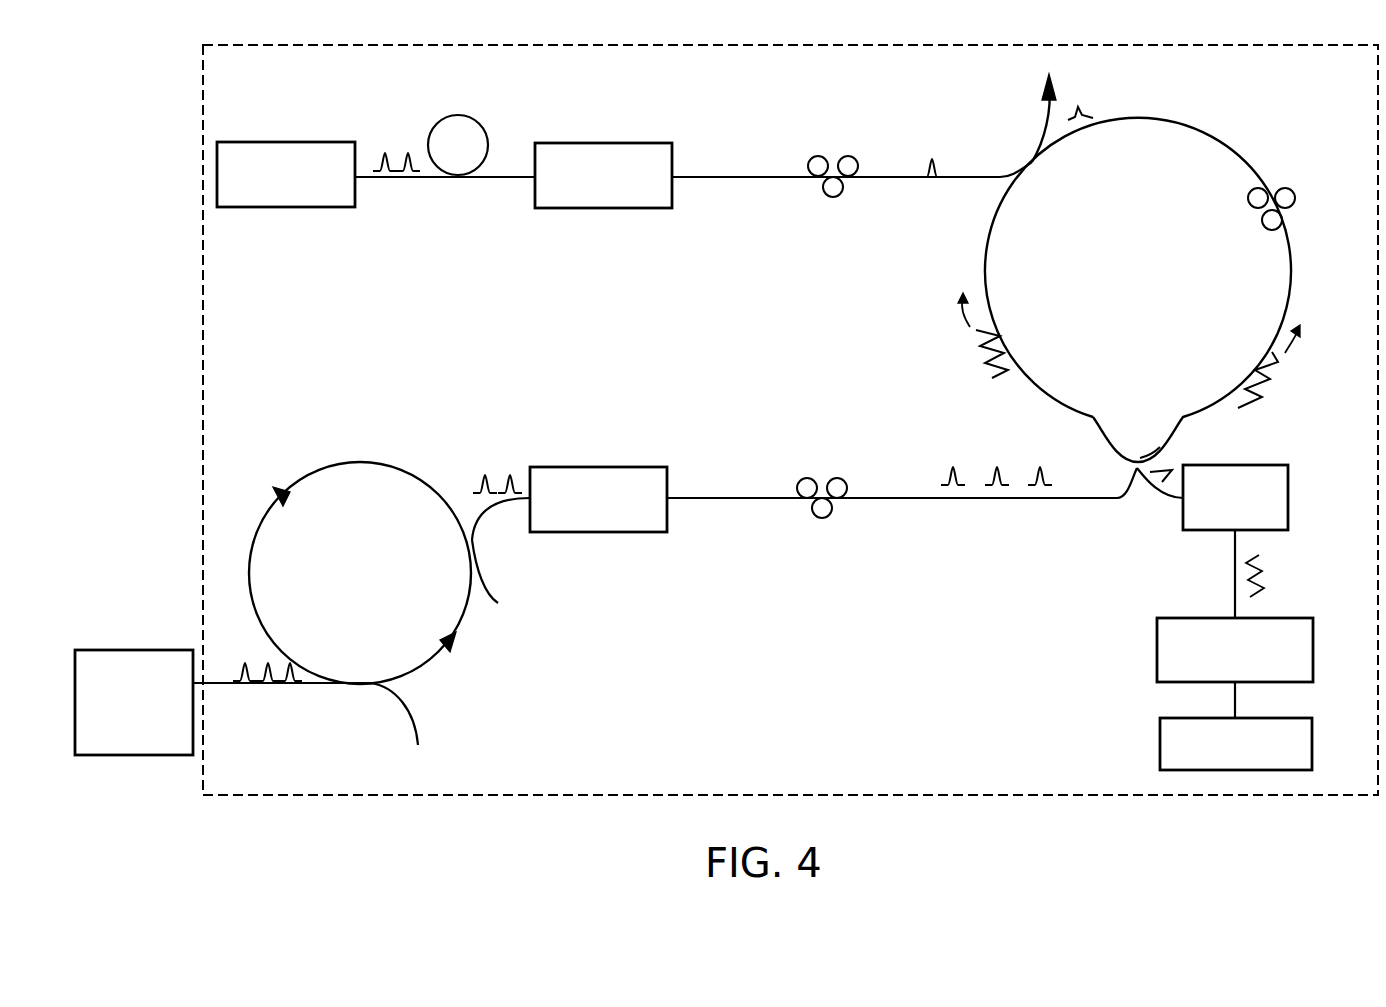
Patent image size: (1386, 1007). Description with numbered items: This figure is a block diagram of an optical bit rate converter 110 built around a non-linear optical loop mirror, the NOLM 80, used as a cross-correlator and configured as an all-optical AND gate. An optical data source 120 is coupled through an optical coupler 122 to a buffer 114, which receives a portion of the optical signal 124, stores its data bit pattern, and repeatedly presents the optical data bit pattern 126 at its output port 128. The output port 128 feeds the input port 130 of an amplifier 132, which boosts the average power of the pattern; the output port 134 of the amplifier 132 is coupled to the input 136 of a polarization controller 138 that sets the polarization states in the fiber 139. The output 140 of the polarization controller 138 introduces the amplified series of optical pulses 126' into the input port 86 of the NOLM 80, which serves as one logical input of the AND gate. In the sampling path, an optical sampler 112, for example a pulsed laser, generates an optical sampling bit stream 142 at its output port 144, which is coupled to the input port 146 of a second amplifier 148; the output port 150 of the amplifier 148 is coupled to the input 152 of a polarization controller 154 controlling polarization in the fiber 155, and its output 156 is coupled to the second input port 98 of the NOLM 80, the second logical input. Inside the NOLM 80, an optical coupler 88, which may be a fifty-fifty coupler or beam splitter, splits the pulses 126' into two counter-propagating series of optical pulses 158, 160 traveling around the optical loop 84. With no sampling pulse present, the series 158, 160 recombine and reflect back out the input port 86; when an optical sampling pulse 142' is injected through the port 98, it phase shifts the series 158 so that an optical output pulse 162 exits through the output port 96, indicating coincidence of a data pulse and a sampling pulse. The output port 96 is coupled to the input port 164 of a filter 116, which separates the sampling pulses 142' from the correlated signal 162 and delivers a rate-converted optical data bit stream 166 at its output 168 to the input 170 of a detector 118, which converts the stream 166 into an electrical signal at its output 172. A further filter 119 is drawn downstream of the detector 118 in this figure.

The NOLM 80 is at (1313, 123).
The optical loop 84 is at (1242, 158).
The input port 86 is at (1119, 491).
The optical coupler 88 is at (1152, 458).
The output port 96 is at (1150, 498).
The second input port 98 is at (1032, 163).
The optical bit rate converter 110 is at (1060, 797).
The optical sampler 112 is at (316, 140).
The buffer 114 is at (300, 481).
The filter 116 is at (1267, 463).
The detector 118 is at (1315, 633).
The filter 119 is at (1312, 733).
The optical data source 120 is at (125, 648).
The optical coupler 122 is at (352, 686).
The optical signal 124 is at (248, 665).
The optical data bit pattern 126 is at (497, 464).
The series of optical pulses 126' is at (996, 460).
The output port 128 is at (475, 572).
The input port 130 is at (527, 500).
The amplifier 132 is at (591, 466).
The output port 134 is at (670, 500).
The input 136 is at (808, 500).
The polarization controller 138 is at (822, 477).
The fiber 139 is at (750, 493).
The output 140 is at (838, 502).
The optical sampling bit stream 142 is at (396, 139).
The optical sampling pulse 142' is at (933, 140).
The output port 144 is at (362, 178).
The input port 146 is at (528, 178).
The second amplifier 148 is at (620, 141).
The output port 150 is at (675, 178).
The input 152 is at (803, 182).
The polarization controller 154 is at (833, 153).
The fiber 155 is at (733, 173).
The output 156 is at (862, 180).
The counter-propagating series of optical pulses 158 is at (968, 362).
The counter-propagating series of optical pulses 160 is at (1278, 395).
The optical output pulse 162 is at (1178, 474).
The input port 164 is at (1181, 505).
The rate-converted optical data bit stream 166 is at (1268, 584).
The output 168 is at (1233, 537).
The input 170 is at (1233, 615).
The output 172 is at (1237, 688).